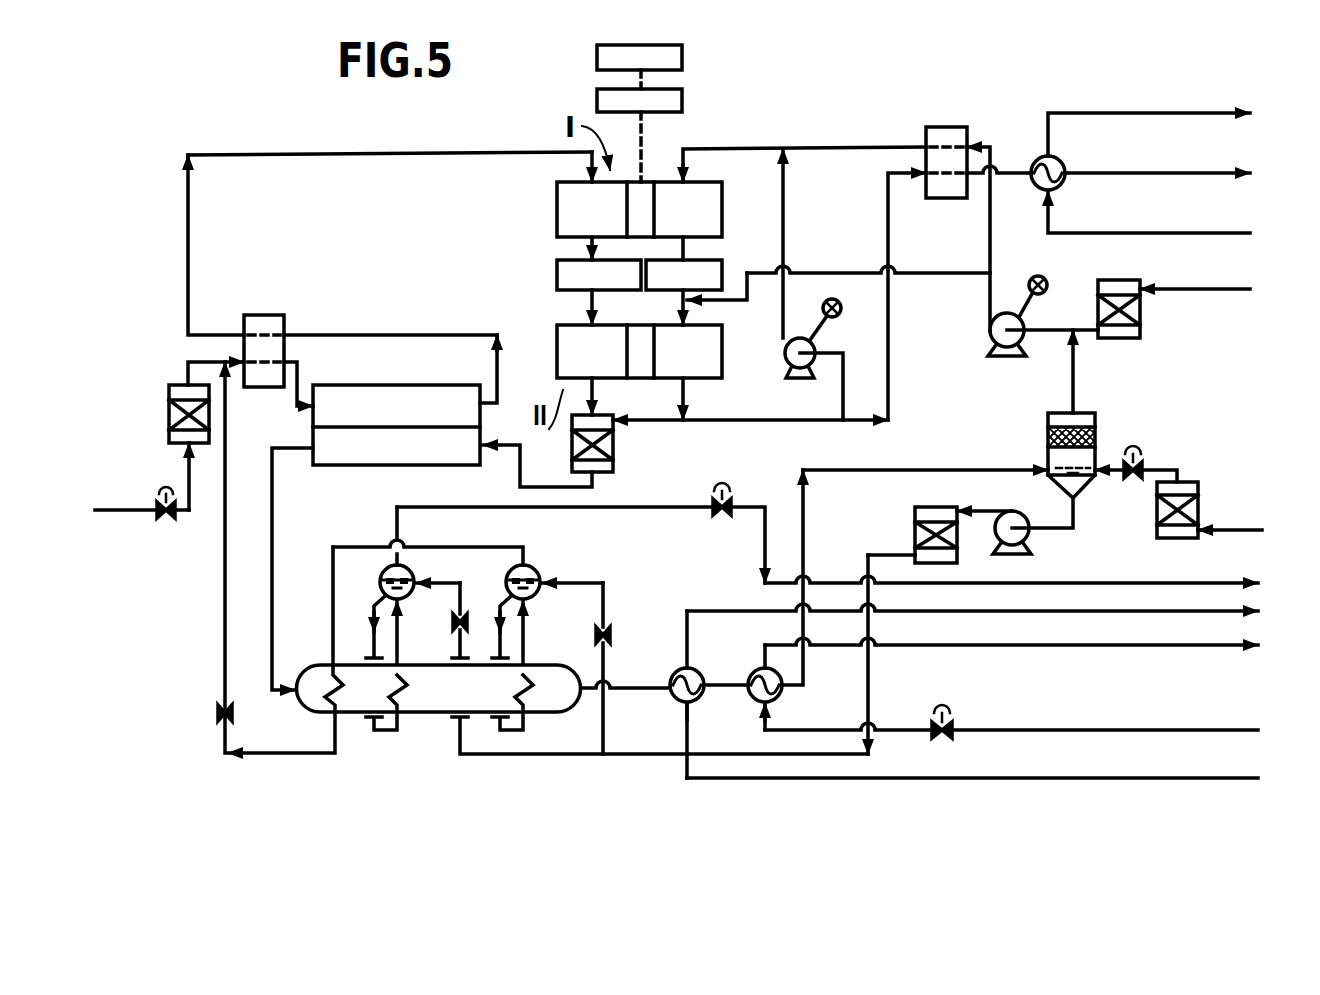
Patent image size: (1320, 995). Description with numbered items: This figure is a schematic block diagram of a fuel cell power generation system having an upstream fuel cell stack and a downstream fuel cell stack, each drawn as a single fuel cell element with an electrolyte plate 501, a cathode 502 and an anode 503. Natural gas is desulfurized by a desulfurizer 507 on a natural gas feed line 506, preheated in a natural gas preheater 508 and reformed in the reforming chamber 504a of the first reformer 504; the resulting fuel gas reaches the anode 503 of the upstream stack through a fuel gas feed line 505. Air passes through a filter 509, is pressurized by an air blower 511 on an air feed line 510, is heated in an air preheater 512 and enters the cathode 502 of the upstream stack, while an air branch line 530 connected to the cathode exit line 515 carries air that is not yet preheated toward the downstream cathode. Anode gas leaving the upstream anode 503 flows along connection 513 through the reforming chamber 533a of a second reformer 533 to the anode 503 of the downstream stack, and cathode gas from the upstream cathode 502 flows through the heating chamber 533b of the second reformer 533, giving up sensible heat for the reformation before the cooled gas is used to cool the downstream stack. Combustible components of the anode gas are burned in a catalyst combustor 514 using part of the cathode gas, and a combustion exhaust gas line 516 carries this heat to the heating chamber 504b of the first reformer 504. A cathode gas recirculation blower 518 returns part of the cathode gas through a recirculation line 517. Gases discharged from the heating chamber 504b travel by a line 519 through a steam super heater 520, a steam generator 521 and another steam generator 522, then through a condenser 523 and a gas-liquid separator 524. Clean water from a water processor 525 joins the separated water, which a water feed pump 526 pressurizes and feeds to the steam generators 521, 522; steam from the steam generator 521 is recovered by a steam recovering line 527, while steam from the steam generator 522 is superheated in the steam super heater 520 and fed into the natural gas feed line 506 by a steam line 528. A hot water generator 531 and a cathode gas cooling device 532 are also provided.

The electrolyte plate 501 is at (642, 192).
The cathode 502 is at (698, 233).
The anode 503 is at (602, 233).
The first reformer 504 is at (312, 425).
The reforming chamber 504a is at (434, 390).
The heating chamber 504b is at (398, 463).
The fuel gas feed line 505 is at (258, 128).
The natural gas feed line 506 is at (200, 355).
The desulfurizer 507 is at (168, 392).
The natural gas preheater 508 is at (266, 320).
The filter 509 is at (1142, 336).
The air feed line 510 is at (985, 238).
The air blower 511 is at (1012, 348).
The air preheater 512 is at (924, 133).
The connecting line 513 is at (586, 240).
The catalyst combustor 514 is at (606, 467).
The cathode gas line 515 is at (683, 300).
The combustion exhaust gas line 516 is at (518, 474).
The recirculation line 517 is at (784, 212).
The cathode gas recirculation blower 518 is at (786, 357).
The line 519 is at (268, 622).
The steam super heater 520 is at (343, 695).
The steam generator 521 is at (407, 692).
The steam generator 522 is at (533, 692).
The condenser 523 is at (675, 668).
The gas-liquid separator 524 is at (1088, 458).
The water processor 525 is at (1192, 490).
The water feed pump 526 is at (1027, 536).
The steam recovering line 527 is at (650, 511).
The steam line 528 is at (222, 585).
The air branch line 530 is at (908, 277).
The hot water generator 531 is at (780, 698).
The cathode gas cooling device 532 is at (1035, 158).
The second reformer 533 is at (556, 285).
The reforming chamber 533a is at (599, 275).
The heating chamber 533b is at (684, 275).